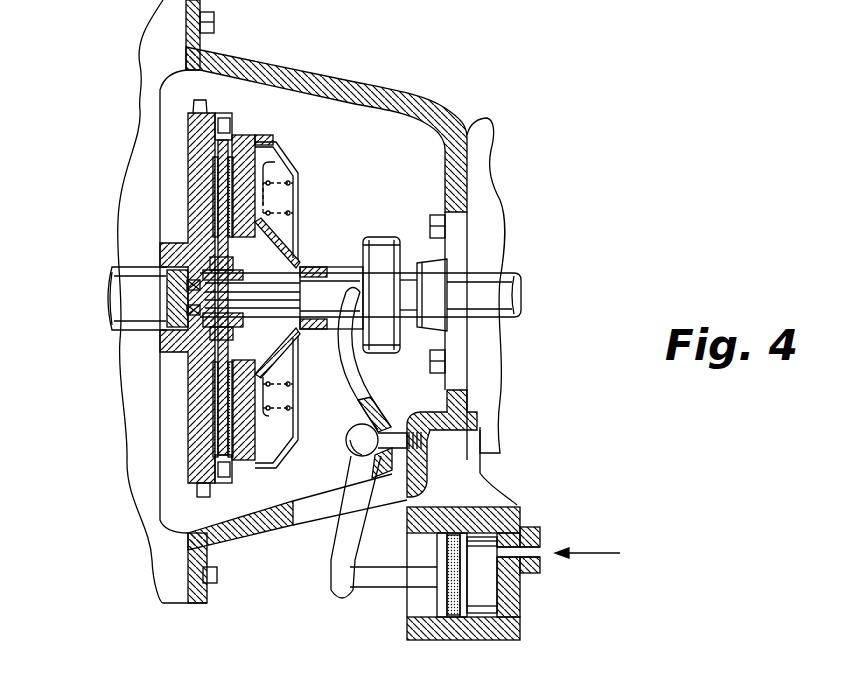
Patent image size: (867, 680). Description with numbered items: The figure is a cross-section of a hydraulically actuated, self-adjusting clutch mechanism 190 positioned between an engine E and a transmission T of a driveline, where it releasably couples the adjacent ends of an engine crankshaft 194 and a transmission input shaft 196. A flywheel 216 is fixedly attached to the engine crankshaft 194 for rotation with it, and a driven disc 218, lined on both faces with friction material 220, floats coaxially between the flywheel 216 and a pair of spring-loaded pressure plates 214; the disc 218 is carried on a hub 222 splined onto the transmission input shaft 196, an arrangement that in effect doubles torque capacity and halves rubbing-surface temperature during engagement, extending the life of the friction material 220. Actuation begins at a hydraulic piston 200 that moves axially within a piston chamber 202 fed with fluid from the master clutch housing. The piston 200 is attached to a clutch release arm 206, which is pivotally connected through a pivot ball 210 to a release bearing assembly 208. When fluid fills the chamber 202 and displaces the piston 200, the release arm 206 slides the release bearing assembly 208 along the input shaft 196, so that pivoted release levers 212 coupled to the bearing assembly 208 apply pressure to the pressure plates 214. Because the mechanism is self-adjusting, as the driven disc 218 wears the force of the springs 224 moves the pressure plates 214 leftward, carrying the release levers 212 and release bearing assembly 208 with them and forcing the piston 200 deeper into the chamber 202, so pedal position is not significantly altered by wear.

The clutch mechanism 190 is at (570, 71).
The engine crankshaft 194 is at (143, 267).
The transmission input shaft 196 is at (497, 288).
The hydraulic piston 200 is at (437, 598).
The piston chamber 202 is at (519, 613).
The clutch release arm 206 is at (331, 574).
The release bearing assembly 208 is at (386, 237).
The pivot ball 210 is at (348, 452).
The release levers 212 is at (272, 163).
The pressure plates 214 is at (270, 147).
The flywheel 216 is at (192, 172).
The driven disc 218 is at (195, 232).
The friction material 220 is at (234, 132).
The hub 222 is at (165, 347).
The springs 224 is at (293, 183).
The engine E is at (140, 101).
The transmission T is at (488, 192).